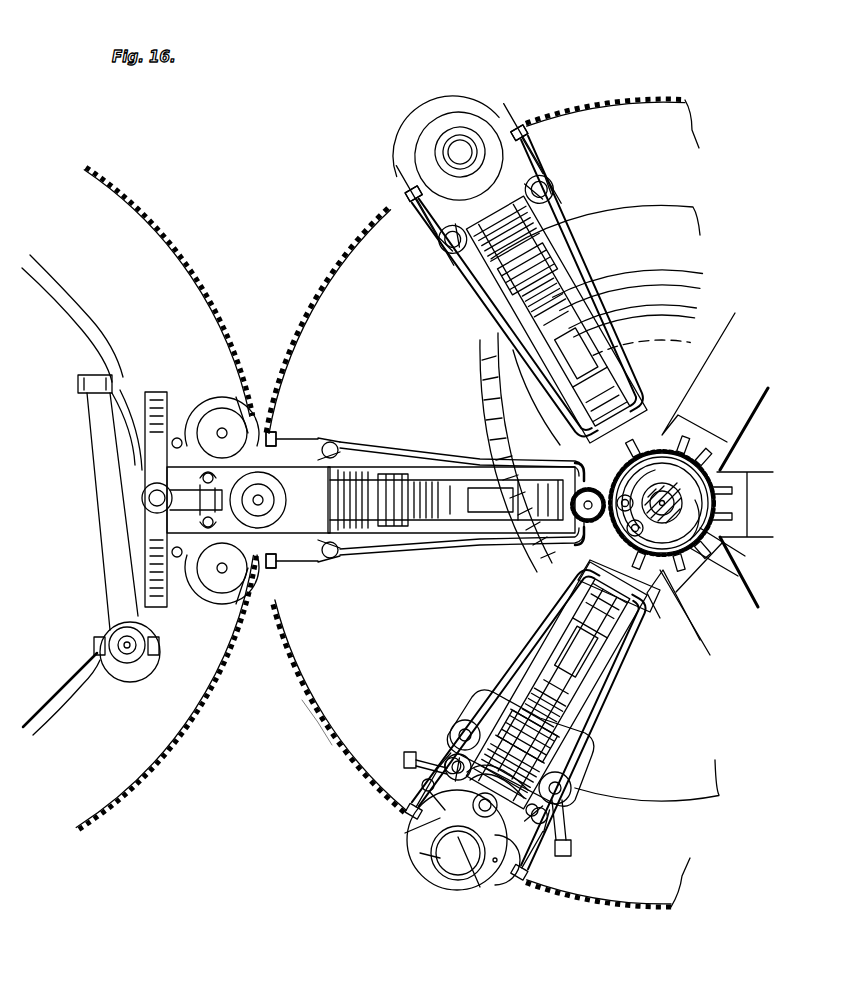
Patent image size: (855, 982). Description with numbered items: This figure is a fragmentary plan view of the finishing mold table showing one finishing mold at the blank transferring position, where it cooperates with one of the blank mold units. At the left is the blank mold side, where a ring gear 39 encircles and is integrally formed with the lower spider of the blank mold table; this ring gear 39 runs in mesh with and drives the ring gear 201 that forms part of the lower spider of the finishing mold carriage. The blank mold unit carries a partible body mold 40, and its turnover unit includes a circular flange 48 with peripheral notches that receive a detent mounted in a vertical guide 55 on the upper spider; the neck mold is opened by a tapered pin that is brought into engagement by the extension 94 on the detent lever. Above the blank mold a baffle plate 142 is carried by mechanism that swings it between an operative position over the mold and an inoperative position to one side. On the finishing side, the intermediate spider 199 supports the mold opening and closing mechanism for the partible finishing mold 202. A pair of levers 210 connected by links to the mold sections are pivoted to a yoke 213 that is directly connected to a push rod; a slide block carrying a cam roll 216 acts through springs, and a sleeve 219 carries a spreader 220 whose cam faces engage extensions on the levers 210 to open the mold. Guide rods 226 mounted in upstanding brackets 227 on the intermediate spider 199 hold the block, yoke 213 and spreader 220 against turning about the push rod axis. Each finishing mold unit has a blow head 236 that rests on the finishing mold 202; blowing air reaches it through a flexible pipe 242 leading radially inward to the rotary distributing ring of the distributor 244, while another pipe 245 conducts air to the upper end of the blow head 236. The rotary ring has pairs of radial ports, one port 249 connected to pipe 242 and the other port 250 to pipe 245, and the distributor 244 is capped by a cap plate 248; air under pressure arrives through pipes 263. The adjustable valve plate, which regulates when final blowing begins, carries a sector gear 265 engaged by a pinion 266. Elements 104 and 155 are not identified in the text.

The ring gear 39 is at (168, 745).
The partible body mold 40 is at (230, 402).
The circular flange 48 is at (158, 394).
The vertical guide 55 is at (108, 502).
The extension on the lever 94 is at (200, 505).
The pivot boss 104 is at (253, 497).
The baffle plate 142 is at (170, 680).
The arm 155 is at (115, 588).
The intermediate spider 199 is at (412, 648).
The ring gear 201 is at (322, 718).
The partible finishing mold 202 is at (410, 828).
The levers 210 is at (315, 572).
The yoke 213 is at (540, 224).
The cam roll 216 is at (612, 642).
The sleeve 219 is at (600, 690).
The spreader 220 is at (600, 714).
The guide rods 226 is at (595, 658).
The upstanding brackets 227 is at (566, 792).
The blow head 236 is at (352, 442).
The flexible pipe 242 is at (396, 447).
The distributor 244 is at (728, 470).
The pipe 245 is at (400, 548).
The cap plate 248 is at (717, 562).
The port 249 is at (619, 586).
The port 250 is at (668, 605).
The pipes 263 is at (662, 504).
The sector gear 265 is at (586, 538).
The pinion 266 is at (582, 455).